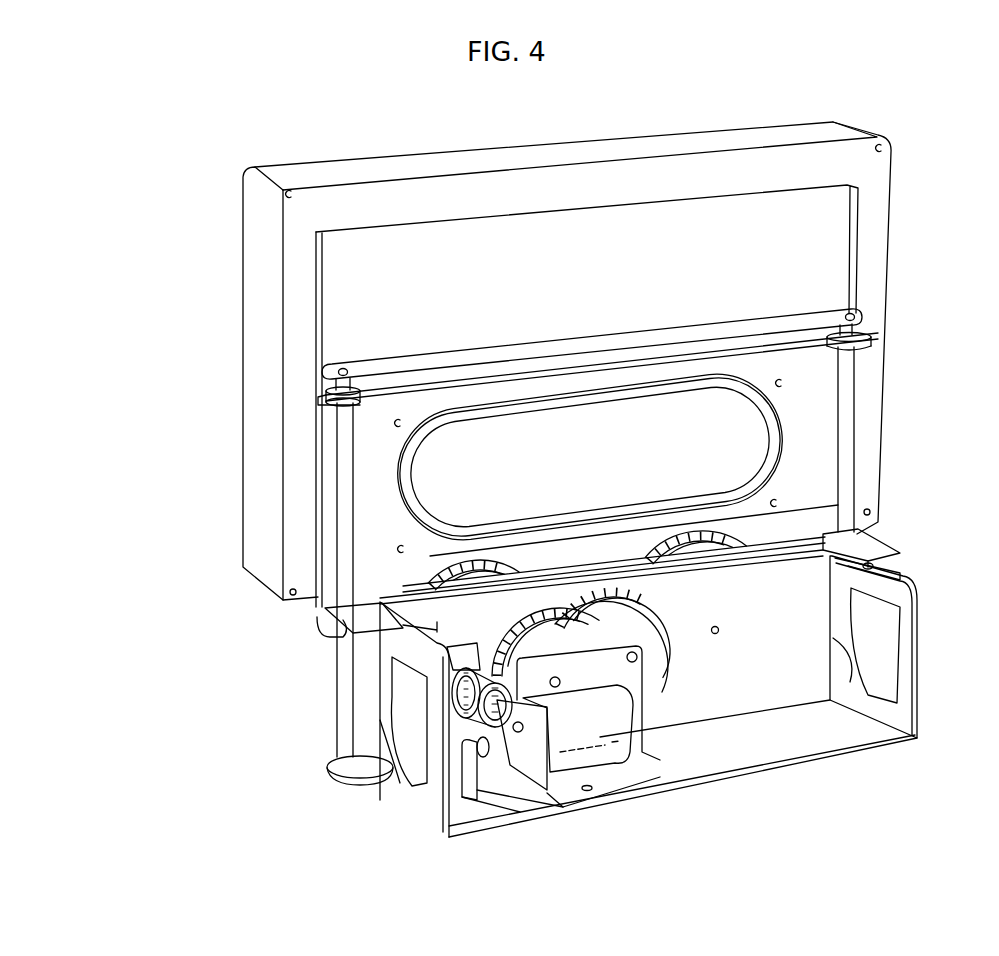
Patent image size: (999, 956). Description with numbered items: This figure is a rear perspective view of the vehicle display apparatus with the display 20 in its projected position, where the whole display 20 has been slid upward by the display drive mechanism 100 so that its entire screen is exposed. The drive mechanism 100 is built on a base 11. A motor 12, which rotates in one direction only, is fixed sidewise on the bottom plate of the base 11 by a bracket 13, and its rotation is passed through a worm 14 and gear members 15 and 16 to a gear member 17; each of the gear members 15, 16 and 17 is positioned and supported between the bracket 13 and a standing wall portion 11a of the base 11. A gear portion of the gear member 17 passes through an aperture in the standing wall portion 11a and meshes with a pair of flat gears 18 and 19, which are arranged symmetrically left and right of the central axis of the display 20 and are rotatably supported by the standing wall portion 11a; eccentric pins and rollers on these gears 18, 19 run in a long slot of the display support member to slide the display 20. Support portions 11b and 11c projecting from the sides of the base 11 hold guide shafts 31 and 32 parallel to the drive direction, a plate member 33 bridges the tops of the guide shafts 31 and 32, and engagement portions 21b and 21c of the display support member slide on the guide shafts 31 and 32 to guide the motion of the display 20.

The display 20 is at (375, 164).
The plate member 33 is at (581, 344).
The engagement portion 21b is at (330, 399).
The engagement portion 21c is at (885, 348).
The guide shaft 31 is at (343, 690).
The guide shaft 32 is at (847, 458).
The gear 18 is at (443, 578).
The gear 19 is at (733, 533).
The gear member 16 is at (512, 627).
The gear member 17 is at (660, 618).
The display drive mechanism 100 is at (596, 664).
The base 11 is at (918, 722).
The standing wall portion 11a is at (783, 672).
The support portion 11b is at (318, 618).
The support portion 11c is at (880, 543).
The bracket 13 is at (648, 712).
The motor 12 is at (605, 752).
The worm 14 is at (495, 757).
The gear member 15 is at (446, 725).